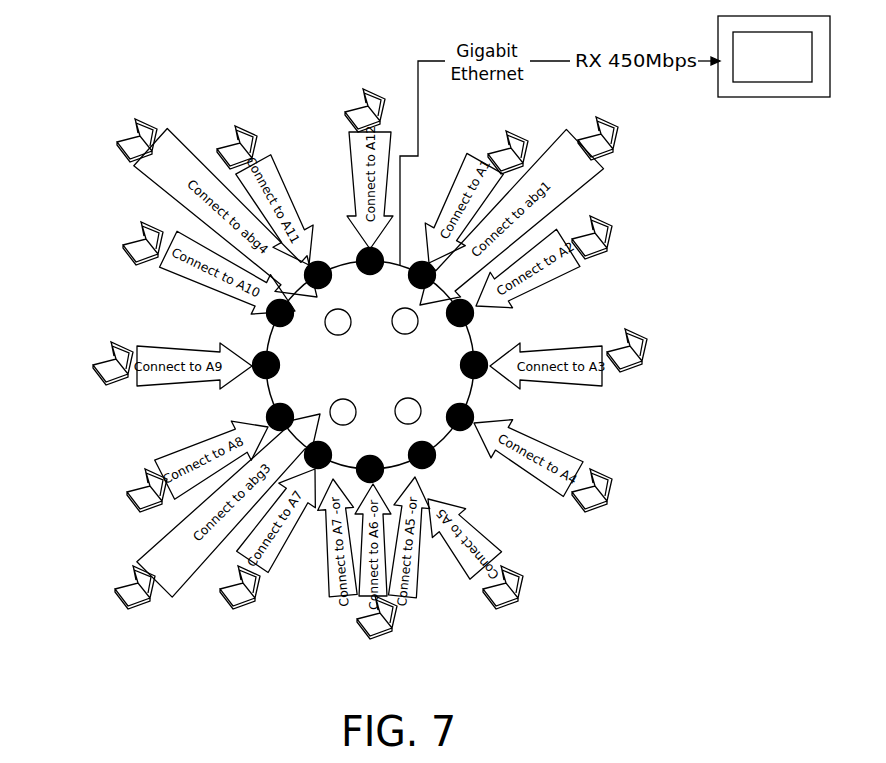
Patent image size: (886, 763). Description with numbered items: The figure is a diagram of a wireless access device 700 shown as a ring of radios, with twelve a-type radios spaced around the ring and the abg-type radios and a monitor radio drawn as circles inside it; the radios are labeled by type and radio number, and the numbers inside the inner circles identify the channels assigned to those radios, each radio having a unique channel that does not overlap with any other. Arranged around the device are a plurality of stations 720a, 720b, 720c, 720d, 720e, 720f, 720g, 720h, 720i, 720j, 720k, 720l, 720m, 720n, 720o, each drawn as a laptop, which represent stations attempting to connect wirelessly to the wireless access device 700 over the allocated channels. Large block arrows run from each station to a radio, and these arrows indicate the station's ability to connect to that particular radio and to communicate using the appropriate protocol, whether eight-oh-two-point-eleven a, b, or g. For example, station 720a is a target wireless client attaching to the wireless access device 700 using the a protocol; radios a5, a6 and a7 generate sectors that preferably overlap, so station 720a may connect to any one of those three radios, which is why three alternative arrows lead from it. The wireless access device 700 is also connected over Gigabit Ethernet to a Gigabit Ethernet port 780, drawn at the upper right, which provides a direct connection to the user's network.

The wireless access device 700 is at (388, 375).
The Gigabit Ethernet port 780 is at (737, 98).
The station 720a is at (395, 623).
The station 720b is at (516, 601).
The station 720c is at (601, 511).
The station 720d is at (630, 373).
The station 720e is at (601, 252).
The station 720f is at (610, 140).
The station 720g is at (512, 130).
The station 720h is at (370, 90).
The station 720i is at (268, 115).
The station 720j is at (118, 150).
The station 720k is at (126, 258).
The station 720l is at (103, 383).
The station 720m is at (147, 510).
The station 720n is at (145, 605).
The station 720o is at (253, 605).